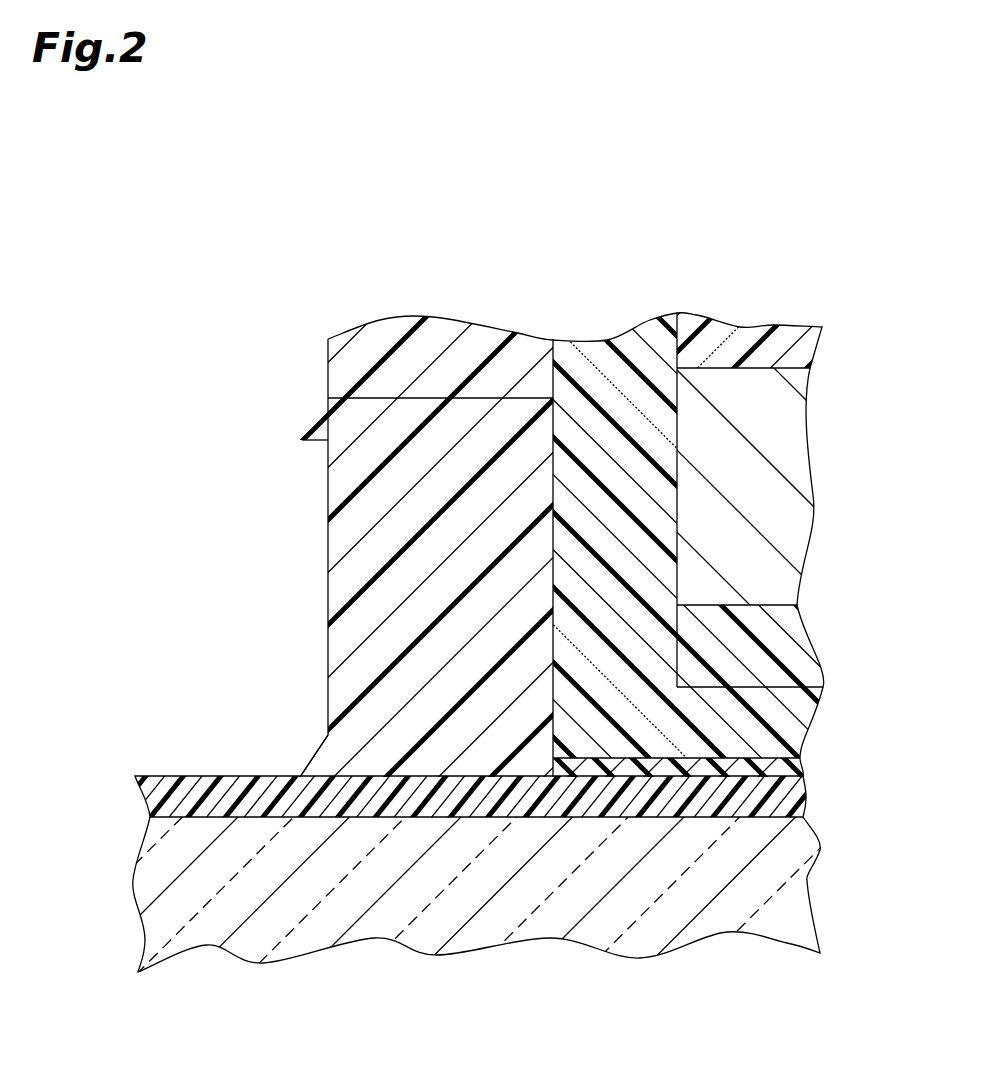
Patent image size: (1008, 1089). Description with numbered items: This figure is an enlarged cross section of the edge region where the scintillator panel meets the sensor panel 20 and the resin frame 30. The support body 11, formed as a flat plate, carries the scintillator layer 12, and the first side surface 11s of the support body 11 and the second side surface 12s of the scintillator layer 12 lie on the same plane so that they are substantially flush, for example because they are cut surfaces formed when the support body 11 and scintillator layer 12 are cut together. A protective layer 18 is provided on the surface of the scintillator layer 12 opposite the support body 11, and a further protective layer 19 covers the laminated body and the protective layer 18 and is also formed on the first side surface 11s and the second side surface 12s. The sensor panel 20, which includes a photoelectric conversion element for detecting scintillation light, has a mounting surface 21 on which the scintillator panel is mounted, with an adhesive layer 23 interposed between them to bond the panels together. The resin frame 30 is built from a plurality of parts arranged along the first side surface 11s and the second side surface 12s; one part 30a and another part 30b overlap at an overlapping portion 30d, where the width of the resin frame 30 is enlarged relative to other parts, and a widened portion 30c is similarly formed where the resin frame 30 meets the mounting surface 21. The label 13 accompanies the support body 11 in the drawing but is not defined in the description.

The support body 11 is at (504, 544).
The first side surface 11s is at (677, 368).
The scintillator layer 12 is at (765, 548).
The second side surface 12s is at (677, 424).
The piezoelectric layer 13 is at (780, 347).
The protective layer 18 is at (750, 644).
The protective layer 19 is at (603, 380).
The sensor panel 20 is at (767, 878).
The mounting surface 21 is at (773, 798).
The adhesive layer 23 is at (704, 768).
The resin frame 30 is at (504, 544).
The one part 30a is at (372, 600).
The another part 30b is at (305, 437).
The widened portion 30c is at (327, 763).
The overlapping portion 30d is at (370, 423).